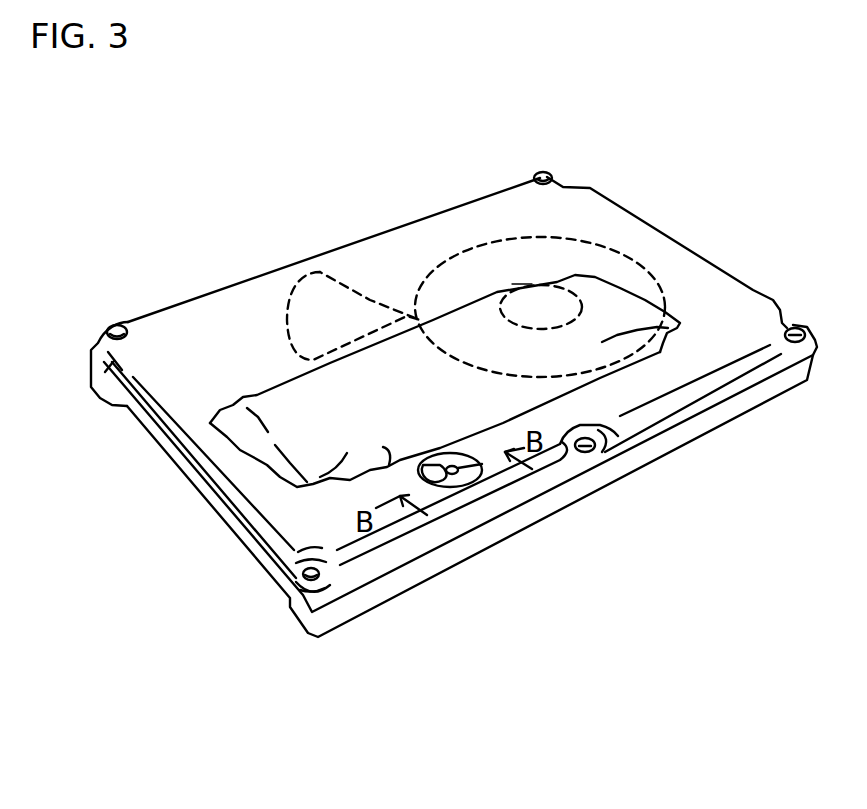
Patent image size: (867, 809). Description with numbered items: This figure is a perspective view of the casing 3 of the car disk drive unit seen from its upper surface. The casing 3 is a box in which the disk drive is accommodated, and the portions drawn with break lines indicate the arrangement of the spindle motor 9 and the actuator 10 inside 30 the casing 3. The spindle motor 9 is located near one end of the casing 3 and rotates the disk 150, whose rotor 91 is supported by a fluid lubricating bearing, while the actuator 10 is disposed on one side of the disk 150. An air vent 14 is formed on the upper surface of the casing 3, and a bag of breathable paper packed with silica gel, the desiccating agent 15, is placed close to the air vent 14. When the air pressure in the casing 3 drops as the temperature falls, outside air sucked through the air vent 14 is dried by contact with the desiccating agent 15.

The casing 3 is at (305, 638).
The spindle motor 9 is at (522, 287).
The actuator 10 is at (285, 293).
The air vent 14 is at (456, 473).
The desiccating agent 15 is at (273, 467).
The inside of the casing 30 is at (703, 257).
The rotor 91 is at (592, 282).
The disk 150 is at (415, 238).